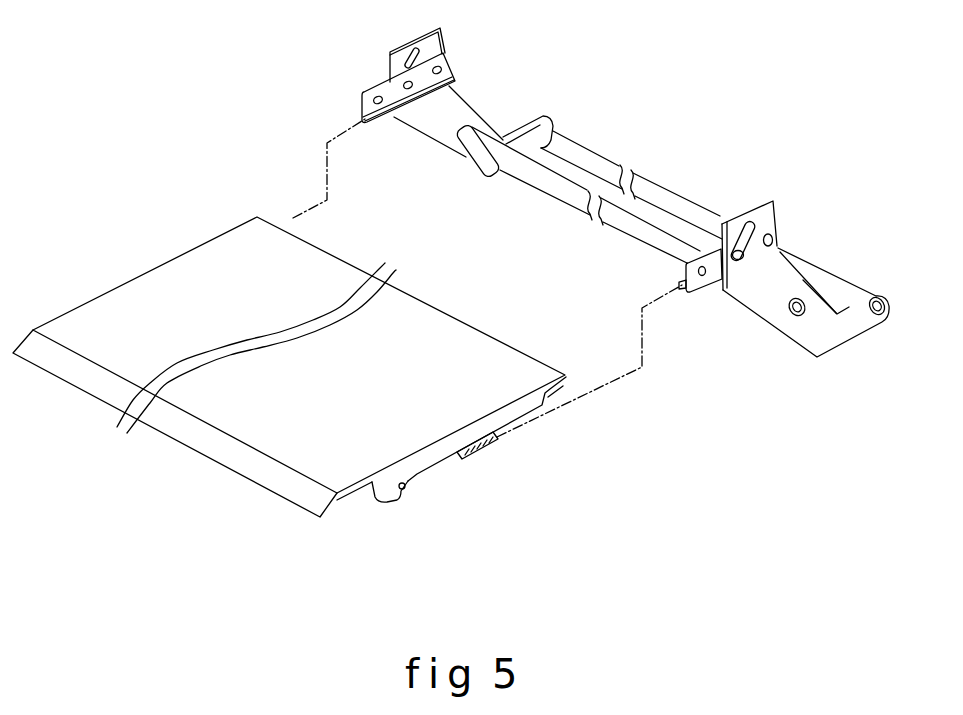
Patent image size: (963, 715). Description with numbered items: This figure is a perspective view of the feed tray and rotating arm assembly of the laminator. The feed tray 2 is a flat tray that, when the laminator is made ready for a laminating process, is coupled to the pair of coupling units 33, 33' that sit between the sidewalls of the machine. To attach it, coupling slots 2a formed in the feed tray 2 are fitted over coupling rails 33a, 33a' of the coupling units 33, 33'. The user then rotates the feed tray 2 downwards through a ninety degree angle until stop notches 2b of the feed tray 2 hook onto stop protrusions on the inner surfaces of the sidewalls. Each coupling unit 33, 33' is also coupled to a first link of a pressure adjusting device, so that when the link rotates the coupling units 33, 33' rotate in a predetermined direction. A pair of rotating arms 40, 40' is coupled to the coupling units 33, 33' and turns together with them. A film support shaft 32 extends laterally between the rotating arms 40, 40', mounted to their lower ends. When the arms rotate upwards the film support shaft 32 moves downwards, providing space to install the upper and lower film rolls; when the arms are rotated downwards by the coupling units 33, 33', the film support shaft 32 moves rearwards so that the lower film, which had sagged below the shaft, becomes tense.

The feed tray 2 is at (265, 432).
The coupling slots 2a is at (485, 452).
The stop notches 2b is at (407, 493).
The film support shaft 32 is at (680, 207).
The coupling unit 33 is at (740, 287).
The coupling rail 33a is at (693, 311).
The rotating arm 40 is at (806, 336).
The coupling unit 33' is at (383, 64).
The coupling rail 33a' is at (408, 136).
The rotating arm 40' is at (473, 93).